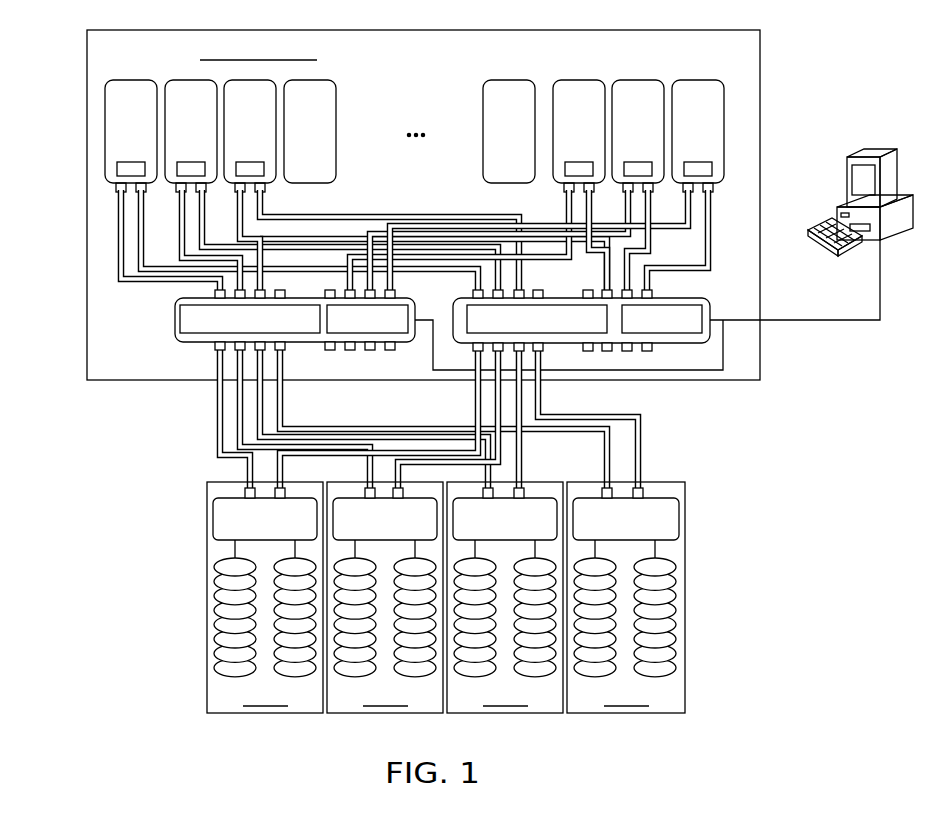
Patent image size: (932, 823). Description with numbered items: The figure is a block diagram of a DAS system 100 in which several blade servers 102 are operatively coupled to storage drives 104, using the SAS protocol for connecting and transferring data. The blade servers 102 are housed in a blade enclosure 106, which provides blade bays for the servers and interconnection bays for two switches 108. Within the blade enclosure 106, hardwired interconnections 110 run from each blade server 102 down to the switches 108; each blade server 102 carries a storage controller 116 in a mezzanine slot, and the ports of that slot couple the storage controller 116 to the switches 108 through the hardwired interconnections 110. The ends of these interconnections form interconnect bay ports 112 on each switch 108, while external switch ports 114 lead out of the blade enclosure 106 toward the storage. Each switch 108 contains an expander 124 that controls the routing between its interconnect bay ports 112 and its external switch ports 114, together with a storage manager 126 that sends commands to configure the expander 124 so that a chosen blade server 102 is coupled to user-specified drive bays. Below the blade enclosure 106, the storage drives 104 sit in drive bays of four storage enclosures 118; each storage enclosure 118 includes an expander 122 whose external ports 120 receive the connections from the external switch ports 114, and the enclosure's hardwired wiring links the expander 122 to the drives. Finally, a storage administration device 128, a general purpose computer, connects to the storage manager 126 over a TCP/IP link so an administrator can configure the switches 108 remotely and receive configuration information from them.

The DAS system 100 is at (450, 745).
The blade server 102 is at (479, 72).
The storage drive 104 is at (216, 629).
The blade enclosure 106 is at (87, 63).
The switch 108 is at (180, 303).
The hardwired interconnection 110 is at (78, 192).
The interconnect bay port 112 is at (563, 274).
The external switch port 114 is at (642, 351).
The storage controller 116 is at (116, 171).
The storage enclosure 118 is at (242, 713).
The external port 120 is at (246, 489).
The expander 122 is at (213, 508).
The expander 124 is at (404, 306).
The storage manager 126 is at (197, 334).
The storage administration device 128 is at (867, 118).